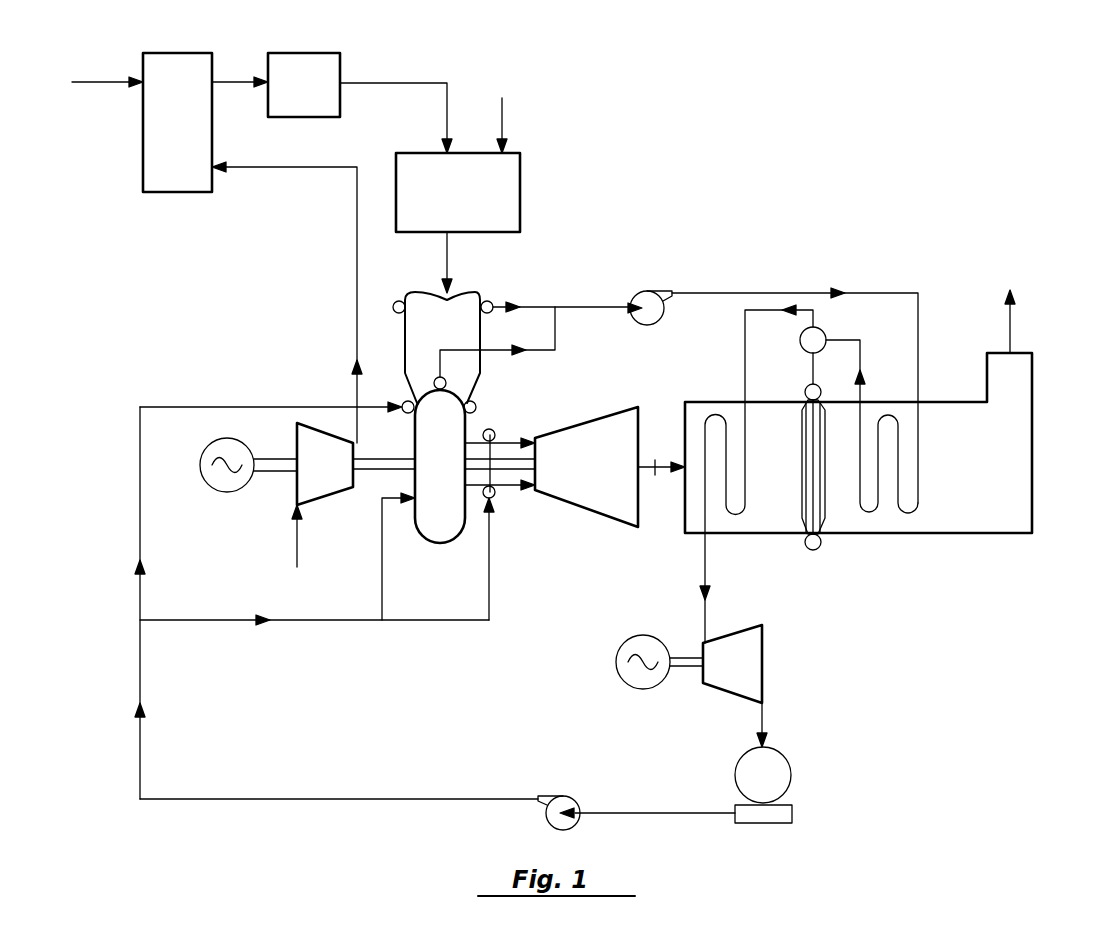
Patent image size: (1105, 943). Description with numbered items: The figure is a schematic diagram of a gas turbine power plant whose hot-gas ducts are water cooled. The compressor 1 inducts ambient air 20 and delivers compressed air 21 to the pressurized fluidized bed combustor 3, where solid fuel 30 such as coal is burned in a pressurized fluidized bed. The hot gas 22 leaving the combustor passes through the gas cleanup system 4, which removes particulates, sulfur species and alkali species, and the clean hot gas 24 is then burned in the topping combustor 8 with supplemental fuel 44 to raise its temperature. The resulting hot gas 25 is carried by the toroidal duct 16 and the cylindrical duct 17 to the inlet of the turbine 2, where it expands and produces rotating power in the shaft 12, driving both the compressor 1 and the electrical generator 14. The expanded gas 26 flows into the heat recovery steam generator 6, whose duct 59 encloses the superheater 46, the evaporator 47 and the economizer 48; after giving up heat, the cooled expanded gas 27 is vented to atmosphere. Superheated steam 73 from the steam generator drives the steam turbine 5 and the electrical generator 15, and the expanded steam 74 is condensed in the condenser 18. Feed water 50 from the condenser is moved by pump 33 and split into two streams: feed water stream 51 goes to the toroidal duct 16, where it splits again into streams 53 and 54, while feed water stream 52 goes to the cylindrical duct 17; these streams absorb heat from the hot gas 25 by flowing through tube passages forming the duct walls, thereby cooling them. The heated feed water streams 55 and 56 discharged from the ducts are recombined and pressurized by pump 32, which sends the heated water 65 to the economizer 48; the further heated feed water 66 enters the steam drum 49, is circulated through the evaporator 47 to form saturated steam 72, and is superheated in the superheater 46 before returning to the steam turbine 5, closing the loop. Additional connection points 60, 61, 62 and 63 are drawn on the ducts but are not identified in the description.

The compressor 1 is at (335, 487).
The turbine 2 is at (600, 505).
The pressurized fluidized bed combustor 3 is at (148, 180).
The gas cleanup system 4 is at (333, 76).
The steam turbine 5 is at (755, 650).
The heat recovery steam generator 6 is at (925, 536).
The topping combustor 8 is at (515, 188).
The shaft 12 is at (390, 459).
The electrical generator 14 is at (222, 487).
The electrical generator 15 is at (625, 680).
The toroidal duct 16 is at (448, 548).
The cylindrical duct 17 is at (480, 365).
The condenser 18 is at (790, 772).
The ambient air 20 is at (297, 560).
The compressed air 21 is at (357, 245).
The hot gas 22 is at (237, 80).
The clean hot gas 24 is at (447, 92).
The hot gas 25 is at (447, 265).
The expanded gas 26 is at (660, 470).
The expanded gas 27 is at (1010, 318).
The solid fuel 30 is at (102, 83).
The pump 32 is at (640, 291).
The pump 33 is at (575, 798).
The supplemental fuel 44 is at (502, 108).
The superheater 46 is at (738, 515).
The evaporator 47 is at (823, 520).
The economizer 48 is at (928, 505).
The steam drum 49 is at (820, 332).
The feed water 50 is at (360, 799).
The feed water stream 51 is at (322, 620).
The feed water stream 52 is at (250, 407).
The feed water stream 53 is at (455, 620).
The feed water stream 54 is at (382, 575).
The heated feed water stream 55 is at (545, 307).
The heated feed water stream 56 is at (555, 330).
The duct 59 is at (702, 402).
The nozzle 60 is at (496, 497).
The nozzle 61 is at (476, 407).
The nozzle 62 is at (399, 300).
The nozzle 63 is at (438, 377).
The heated water 65 is at (870, 293).
The further heated feed water 66 is at (860, 352).
The saturated steam 72 is at (745, 338).
The superheated steam 73 is at (705, 572).
The expanded steam 74 is at (762, 715).